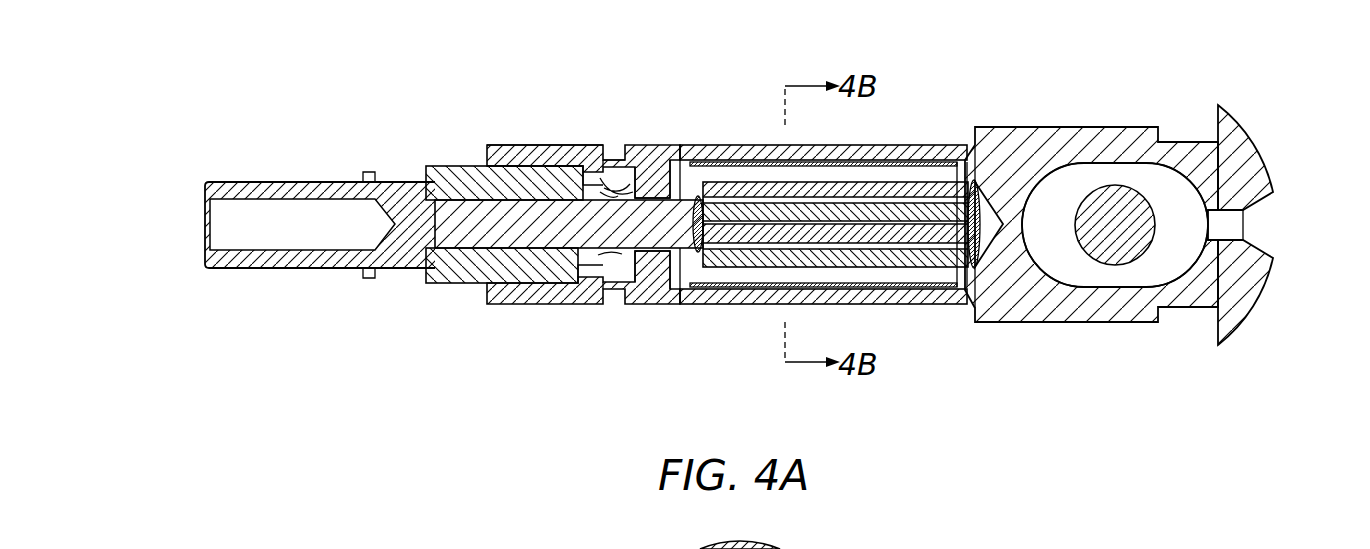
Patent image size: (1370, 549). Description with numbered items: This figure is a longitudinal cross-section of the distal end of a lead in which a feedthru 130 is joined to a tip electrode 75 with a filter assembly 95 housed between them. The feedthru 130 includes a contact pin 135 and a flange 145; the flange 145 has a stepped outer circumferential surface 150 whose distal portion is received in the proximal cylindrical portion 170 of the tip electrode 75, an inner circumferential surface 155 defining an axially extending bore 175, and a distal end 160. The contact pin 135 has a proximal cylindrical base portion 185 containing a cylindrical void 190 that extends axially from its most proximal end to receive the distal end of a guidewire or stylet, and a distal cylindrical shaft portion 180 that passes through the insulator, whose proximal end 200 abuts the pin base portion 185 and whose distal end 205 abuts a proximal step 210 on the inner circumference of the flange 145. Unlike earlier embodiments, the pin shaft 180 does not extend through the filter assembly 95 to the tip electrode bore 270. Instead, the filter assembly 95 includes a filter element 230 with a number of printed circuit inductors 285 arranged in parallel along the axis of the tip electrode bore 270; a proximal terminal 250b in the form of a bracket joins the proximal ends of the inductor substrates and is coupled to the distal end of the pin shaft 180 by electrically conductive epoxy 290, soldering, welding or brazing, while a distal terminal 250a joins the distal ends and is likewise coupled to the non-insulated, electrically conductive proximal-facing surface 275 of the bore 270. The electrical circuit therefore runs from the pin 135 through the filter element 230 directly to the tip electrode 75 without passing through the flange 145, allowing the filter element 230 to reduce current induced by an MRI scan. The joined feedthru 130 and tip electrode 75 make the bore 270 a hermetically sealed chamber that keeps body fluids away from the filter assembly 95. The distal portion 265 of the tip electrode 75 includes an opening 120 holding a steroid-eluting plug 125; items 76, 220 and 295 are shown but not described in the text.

The tip electrode 75 is at (1268, 140).
The distal end of tube 76 is at (735, 145).
The filter assembly 95 is at (897, 370).
The opening 120 is at (1177, 258).
The steroid-eluting plug 125 is at (1113, 263).
The feedthru 130 is at (518, 88).
The contact pin 135 is at (403, 268).
The flange 145 is at (556, 146).
The outer circumferential surface 150 is at (615, 150).
The inner circumferential surface 155 is at (659, 155).
The distal end 160 is at (657, 300).
The proximal cylindrical portion 170 is at (757, 148).
The bore 175 is at (594, 150).
The distal cylindrical shaft portion 180 is at (600, 294).
The proximal cylindrical base portion 185 is at (272, 270).
The cylindrical void 190 is at (233, 246).
The proximal end 200 is at (435, 167).
The distal end 205 is at (585, 272).
The proximal step 210 is at (598, 262).
The seal ring 220 is at (696, 156).
The filter element 230 is at (865, 162).
The distal terminal 250a is at (722, 270).
The proximal terminal 250b is at (950, 190).
The distal portion 265 is at (1063, 127).
The tip electrode bore 270 is at (845, 181).
The proximal-facing surface 275 is at (962, 160).
The printed circuit inductors 285 is at (907, 182).
The electrically conductive epoxy 290 is at (690, 283).
The recess 295 is at (977, 292).